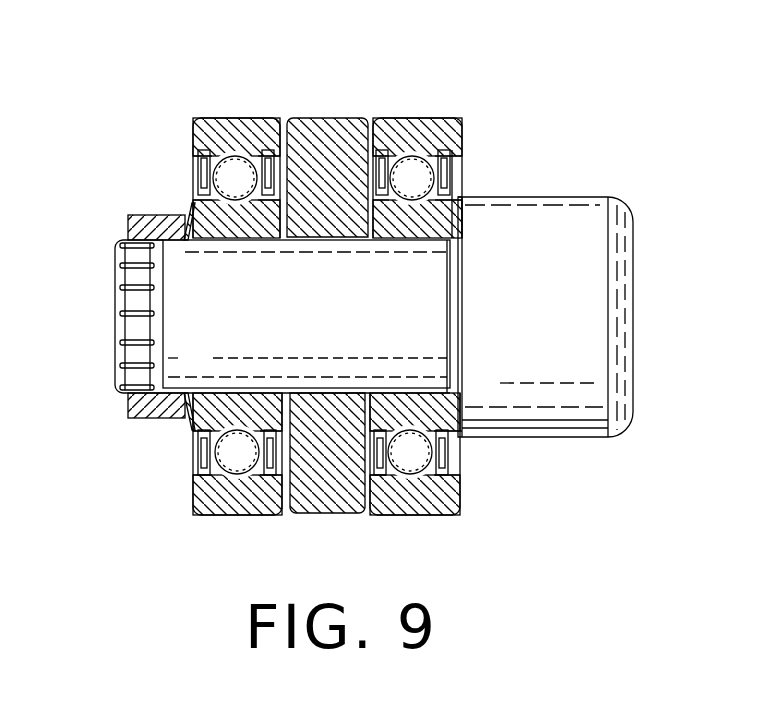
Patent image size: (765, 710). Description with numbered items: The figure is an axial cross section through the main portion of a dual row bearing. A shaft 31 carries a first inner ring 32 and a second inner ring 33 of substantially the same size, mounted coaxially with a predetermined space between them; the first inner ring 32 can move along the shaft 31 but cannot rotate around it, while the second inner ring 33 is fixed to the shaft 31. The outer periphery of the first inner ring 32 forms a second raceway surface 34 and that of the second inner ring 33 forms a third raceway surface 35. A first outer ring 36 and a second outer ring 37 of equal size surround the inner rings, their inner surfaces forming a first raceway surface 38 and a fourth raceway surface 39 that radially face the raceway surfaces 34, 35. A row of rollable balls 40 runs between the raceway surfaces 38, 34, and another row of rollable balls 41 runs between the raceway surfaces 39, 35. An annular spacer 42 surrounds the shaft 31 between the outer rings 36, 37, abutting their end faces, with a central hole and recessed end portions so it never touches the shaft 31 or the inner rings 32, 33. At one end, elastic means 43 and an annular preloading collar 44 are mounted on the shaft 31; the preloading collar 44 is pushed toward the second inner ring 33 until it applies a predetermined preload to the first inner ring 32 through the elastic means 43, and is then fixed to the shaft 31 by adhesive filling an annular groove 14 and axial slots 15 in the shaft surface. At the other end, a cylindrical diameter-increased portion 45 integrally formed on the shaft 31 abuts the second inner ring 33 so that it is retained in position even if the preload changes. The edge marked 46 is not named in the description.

The annular groove 14 is at (157, 278).
The axial slots 15 is at (142, 343).
The shaft 31 is at (208, 305).
The first inner ring 32 is at (190, 427).
The second inner ring 33 is at (425, 410).
The second raceway surface 34 is at (200, 467).
The third raceway surface 35 is at (460, 493).
The first outer ring 36 is at (252, 135).
The second outer ring 37 is at (410, 140).
The first raceway surface 38 is at (237, 470).
The fourth raceway surface 39 is at (410, 468).
The rollable balls 40 is at (215, 163).
The rollable balls 41 is at (415, 175).
The spacer 42 is at (337, 135).
The elastic means 43 is at (185, 215).
The preloading collar 44 is at (135, 225).
The diameter-increased portion 45 is at (583, 323).
The housing edge 46 is at (462, 196).